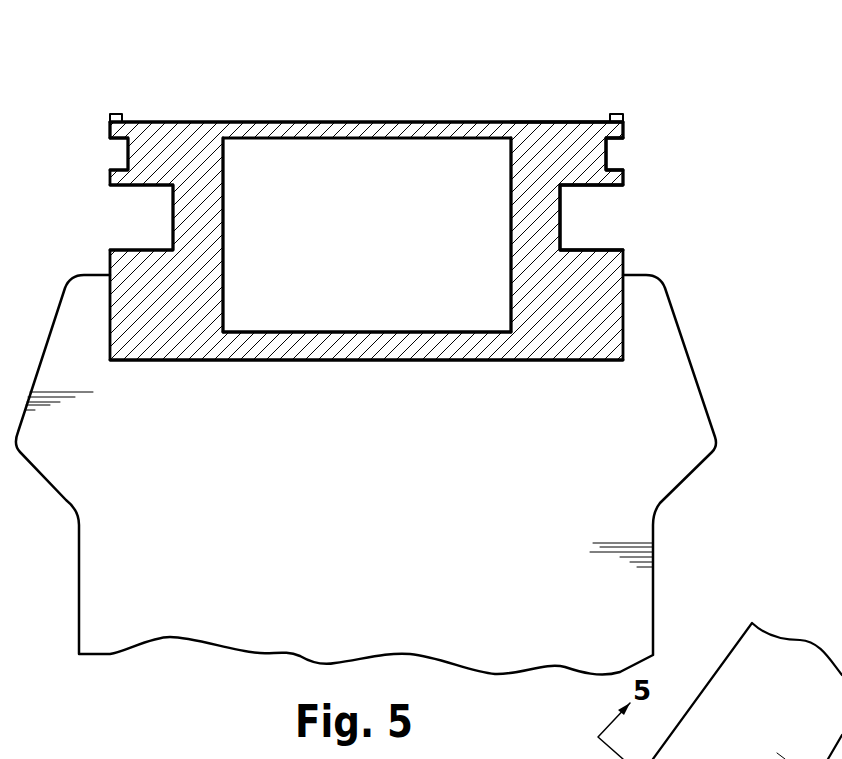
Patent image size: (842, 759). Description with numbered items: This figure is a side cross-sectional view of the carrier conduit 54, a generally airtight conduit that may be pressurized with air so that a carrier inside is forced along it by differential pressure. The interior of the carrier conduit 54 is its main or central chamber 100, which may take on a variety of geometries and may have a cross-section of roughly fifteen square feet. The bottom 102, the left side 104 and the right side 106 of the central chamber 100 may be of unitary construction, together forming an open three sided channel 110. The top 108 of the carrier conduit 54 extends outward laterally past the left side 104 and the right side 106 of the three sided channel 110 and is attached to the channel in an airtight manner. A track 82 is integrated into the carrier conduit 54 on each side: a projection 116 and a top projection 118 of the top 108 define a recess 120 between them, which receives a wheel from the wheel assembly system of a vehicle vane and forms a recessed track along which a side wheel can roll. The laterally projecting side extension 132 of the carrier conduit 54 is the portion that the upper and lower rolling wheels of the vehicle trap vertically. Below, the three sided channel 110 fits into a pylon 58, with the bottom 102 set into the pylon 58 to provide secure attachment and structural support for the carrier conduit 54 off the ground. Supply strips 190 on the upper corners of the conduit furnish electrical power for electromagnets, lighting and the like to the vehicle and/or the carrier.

The carrier conduit 54 is at (418, 97).
The pylon 58 is at (367, 573).
The track 82 is at (668, 128).
The central chamber 100 is at (380, 208).
The bottom 102 is at (355, 332).
The left side 104 is at (223, 261).
The right side 106 is at (510, 240).
The top 108 is at (302, 122).
The three sided channel 110 is at (433, 363).
The projection 116 is at (108, 179).
The top projection 118 is at (110, 128).
The recess 120 is at (117, 156).
The side extension 132 is at (568, 138).
The supply strips 190 is at (112, 113).